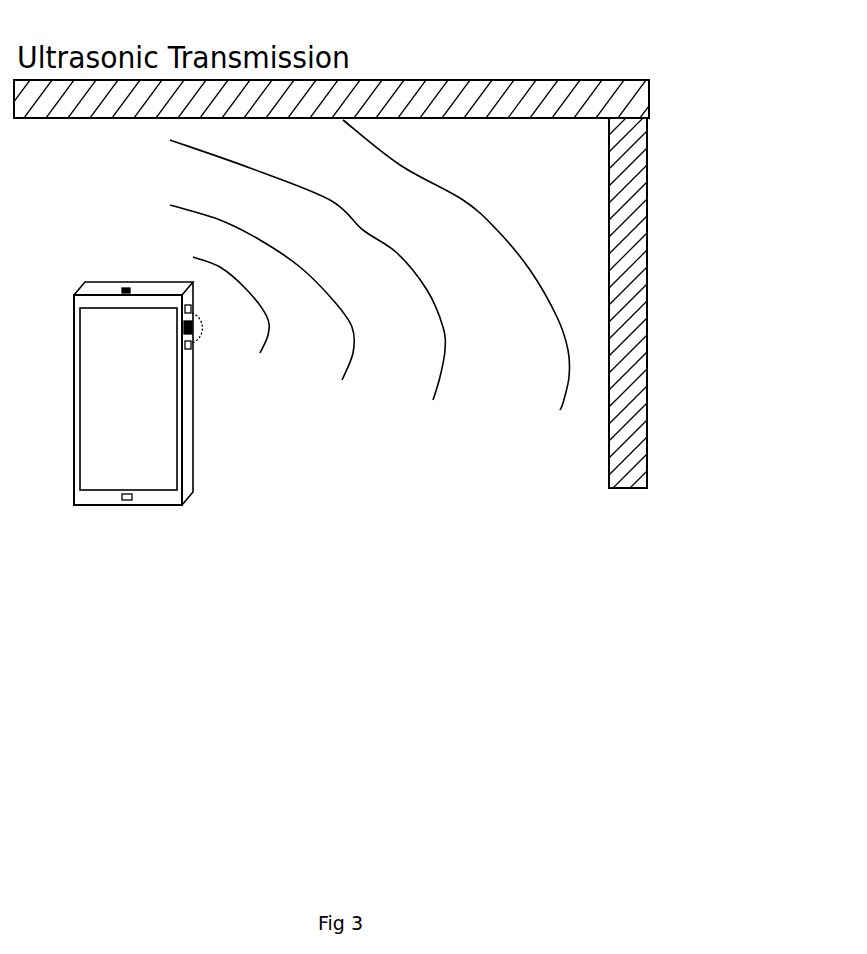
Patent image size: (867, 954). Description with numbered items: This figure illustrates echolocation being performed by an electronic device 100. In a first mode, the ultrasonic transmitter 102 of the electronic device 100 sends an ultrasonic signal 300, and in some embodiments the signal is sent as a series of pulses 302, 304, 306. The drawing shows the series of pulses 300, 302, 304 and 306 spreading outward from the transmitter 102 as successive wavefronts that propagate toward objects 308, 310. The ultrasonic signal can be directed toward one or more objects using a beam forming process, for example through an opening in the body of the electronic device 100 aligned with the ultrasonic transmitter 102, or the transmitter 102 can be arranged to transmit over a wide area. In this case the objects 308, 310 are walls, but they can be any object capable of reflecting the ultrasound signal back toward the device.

The electronic device 100 is at (77, 296).
The ultrasonic transmitter 102 is at (193, 328).
The ultrasonic signal 300 is at (273, 323).
The pulse 302 is at (343, 383).
The pulse 304 is at (433, 402).
The pulse 306 is at (560, 412).
The object 308 is at (587, 81).
The object 310 is at (650, 277).